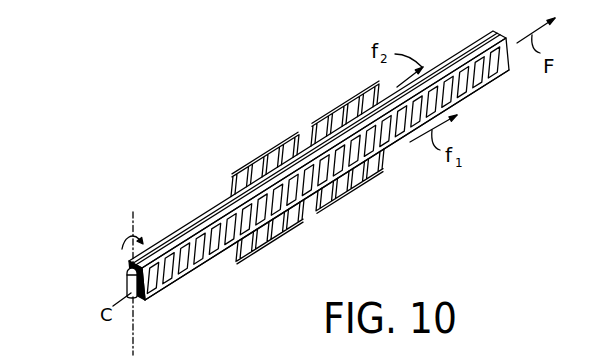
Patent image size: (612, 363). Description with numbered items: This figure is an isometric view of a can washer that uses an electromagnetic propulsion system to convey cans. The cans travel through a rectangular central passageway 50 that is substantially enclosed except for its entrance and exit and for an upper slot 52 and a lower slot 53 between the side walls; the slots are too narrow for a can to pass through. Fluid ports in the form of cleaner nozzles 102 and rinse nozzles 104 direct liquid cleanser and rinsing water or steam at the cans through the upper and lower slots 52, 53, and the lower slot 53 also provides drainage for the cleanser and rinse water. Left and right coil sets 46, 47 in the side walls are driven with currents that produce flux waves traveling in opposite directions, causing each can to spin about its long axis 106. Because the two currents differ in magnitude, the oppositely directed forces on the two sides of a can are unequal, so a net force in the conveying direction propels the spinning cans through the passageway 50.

The first coil set 46 is at (444, 63).
The second coil set 47 is at (473, 82).
The central passageway 50 is at (138, 297).
The upper slot 52 is at (207, 227).
The lower slot 53 is at (306, 214).
The cleaner nozzles 102 is at (258, 160).
The rinse nozzles 104 is at (346, 104).
The long axis 106 is at (128, 231).